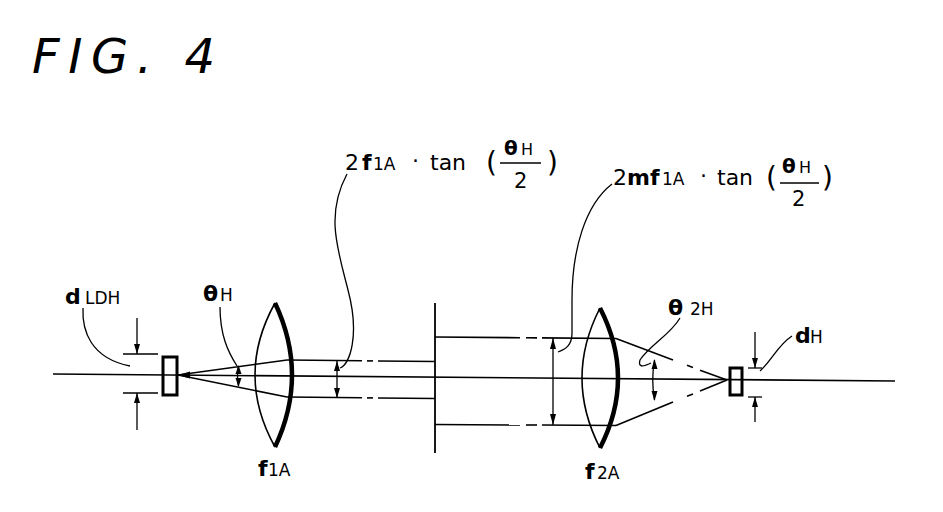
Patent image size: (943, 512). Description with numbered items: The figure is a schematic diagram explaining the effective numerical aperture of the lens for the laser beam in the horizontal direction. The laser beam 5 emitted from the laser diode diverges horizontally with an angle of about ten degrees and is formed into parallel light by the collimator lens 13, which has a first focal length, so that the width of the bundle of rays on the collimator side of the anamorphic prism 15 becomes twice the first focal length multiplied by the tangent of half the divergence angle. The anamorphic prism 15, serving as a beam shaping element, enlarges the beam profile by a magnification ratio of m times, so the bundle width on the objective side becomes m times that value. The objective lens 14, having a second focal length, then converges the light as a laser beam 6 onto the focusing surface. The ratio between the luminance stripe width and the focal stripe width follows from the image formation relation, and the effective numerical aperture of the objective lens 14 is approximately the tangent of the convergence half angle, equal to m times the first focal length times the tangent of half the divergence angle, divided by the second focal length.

The laser beam 5 is at (170, 354).
The collimator lens 13 is at (282, 322).
The anamorphic prism 15 is at (437, 447).
The objective lens 14 is at (606, 330).
The laser beam 6 is at (737, 398).